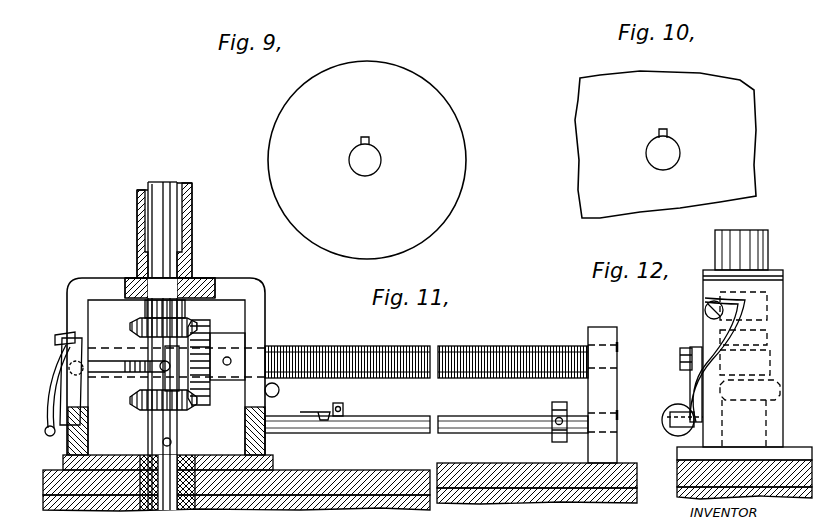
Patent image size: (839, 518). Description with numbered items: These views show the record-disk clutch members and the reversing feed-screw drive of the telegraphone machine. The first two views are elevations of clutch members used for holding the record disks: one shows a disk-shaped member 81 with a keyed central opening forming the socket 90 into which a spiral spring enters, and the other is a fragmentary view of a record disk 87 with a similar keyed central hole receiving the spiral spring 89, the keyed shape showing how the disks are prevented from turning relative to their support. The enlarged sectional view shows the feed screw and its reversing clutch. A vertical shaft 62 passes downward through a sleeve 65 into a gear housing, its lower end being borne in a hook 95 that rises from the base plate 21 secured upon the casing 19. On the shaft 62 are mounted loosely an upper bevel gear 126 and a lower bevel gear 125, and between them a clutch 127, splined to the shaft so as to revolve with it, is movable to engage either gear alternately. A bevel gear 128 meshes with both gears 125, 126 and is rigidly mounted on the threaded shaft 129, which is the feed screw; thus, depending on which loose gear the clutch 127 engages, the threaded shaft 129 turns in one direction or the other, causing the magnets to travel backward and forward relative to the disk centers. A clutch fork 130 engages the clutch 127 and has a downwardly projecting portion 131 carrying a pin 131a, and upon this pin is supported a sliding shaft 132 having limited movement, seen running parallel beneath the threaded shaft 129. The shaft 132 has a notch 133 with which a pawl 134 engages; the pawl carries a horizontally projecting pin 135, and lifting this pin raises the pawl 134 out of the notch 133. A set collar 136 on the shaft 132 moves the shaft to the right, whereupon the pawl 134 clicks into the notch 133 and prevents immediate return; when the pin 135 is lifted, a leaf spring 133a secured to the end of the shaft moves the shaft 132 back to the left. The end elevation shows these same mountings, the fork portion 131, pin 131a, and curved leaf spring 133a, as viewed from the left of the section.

In FIG. 9, the disc 81 is at (367, 160).
In FIG. 9, the socket 90 is at (370, 161).
In FIG. 10, the record disk 87 is at (665, 144).
In FIG. 10, the spiral spring 89 is at (672, 152).
In FIG. 11, the vertical shaft 62 is at (160, 190).
In FIG. 11, the shaft sleeve 65 is at (192, 218).
In FIG. 12, the shaft sleeve 65 is at (768, 243).
In FIG. 11, the hook 95 is at (266, 297).
In FIG. 12, the hook 95 is at (783, 278).
In FIG. 11, the bevel gear 126 is at (130, 322).
In FIG. 12, the bevel gear 126 is at (772, 305).
In FIG. 11, the bevel gear 125 is at (130, 398).
In FIG. 12, the bevel gear 125 is at (780, 393).
In FIG. 11, the bevel gear 128 is at (212, 330).
In FIG. 11, the clutch 127 is at (110, 358).
In FIG. 12, the clutch 127 is at (760, 343).
In FIG. 11, the threaded shaft 129 is at (330, 333).
In FIG. 11, the sliding shaft 132 is at (412, 411).
In FIG. 12, the sliding shaft 132 is at (676, 432).
In FIG. 11, the notch 133 is at (318, 405).
In FIG. 11, the pawl 134 is at (338, 403).
In FIG. 11, the pin 135 is at (343, 407).
In FIG. 11, the set collar 136 is at (559, 402).
In FIG. 11, the clutch fork 130 is at (56, 338).
In FIG. 12, the clutch fork 130 is at (770, 362).
In FIG. 11, the downwardly projecting portion 131 is at (66, 389).
In FIG. 12, the downwardly projecting portion 131 is at (690, 398).
In FIG. 11, the pin 131a is at (68, 368).
In FIG. 12, the pin 131a is at (668, 414).
In FIG. 11, the leaf spring 133a is at (60, 400).
In FIG. 12, the leaf spring 133a is at (708, 335).
In FIG. 11, the base plate 21 is at (340, 469).
In FIG. 12, the base plate 21 is at (678, 473).
In FIG. 11, the casing 19 is at (517, 490).
In FIG. 12, the casing 19 is at (680, 490).